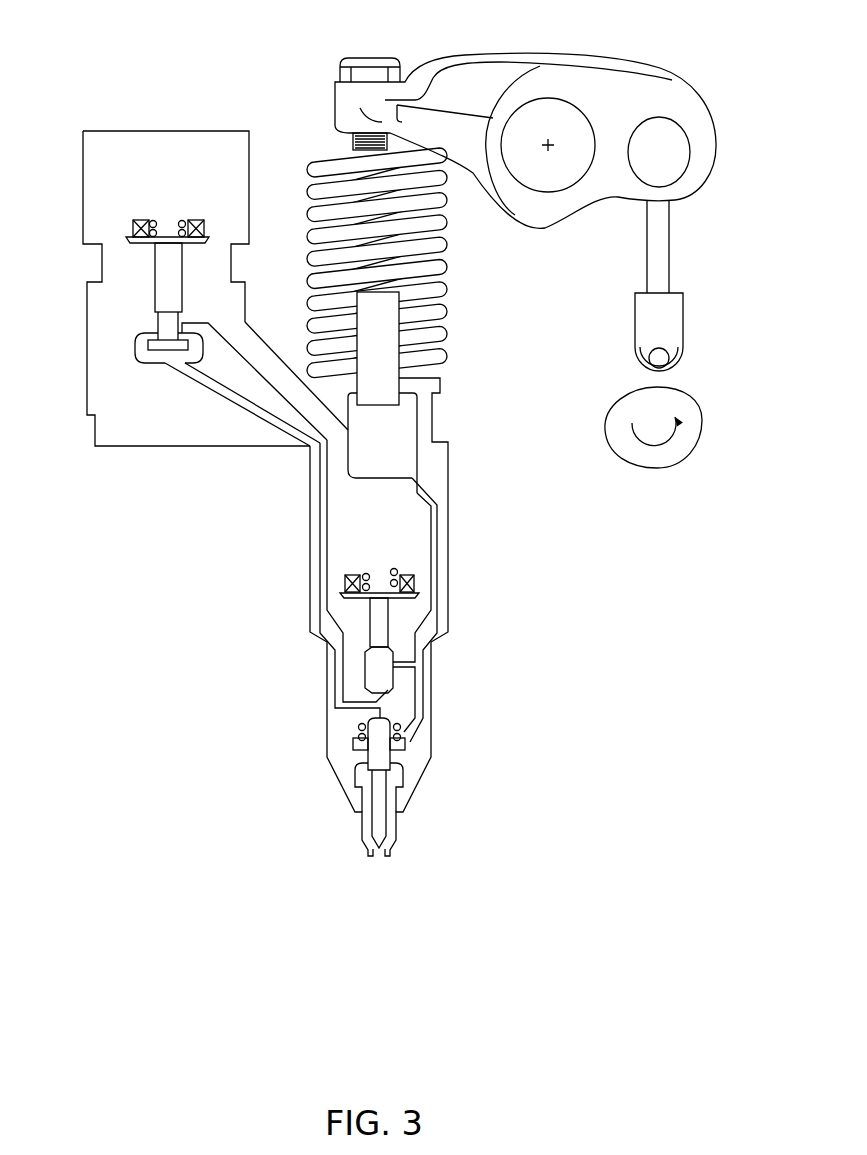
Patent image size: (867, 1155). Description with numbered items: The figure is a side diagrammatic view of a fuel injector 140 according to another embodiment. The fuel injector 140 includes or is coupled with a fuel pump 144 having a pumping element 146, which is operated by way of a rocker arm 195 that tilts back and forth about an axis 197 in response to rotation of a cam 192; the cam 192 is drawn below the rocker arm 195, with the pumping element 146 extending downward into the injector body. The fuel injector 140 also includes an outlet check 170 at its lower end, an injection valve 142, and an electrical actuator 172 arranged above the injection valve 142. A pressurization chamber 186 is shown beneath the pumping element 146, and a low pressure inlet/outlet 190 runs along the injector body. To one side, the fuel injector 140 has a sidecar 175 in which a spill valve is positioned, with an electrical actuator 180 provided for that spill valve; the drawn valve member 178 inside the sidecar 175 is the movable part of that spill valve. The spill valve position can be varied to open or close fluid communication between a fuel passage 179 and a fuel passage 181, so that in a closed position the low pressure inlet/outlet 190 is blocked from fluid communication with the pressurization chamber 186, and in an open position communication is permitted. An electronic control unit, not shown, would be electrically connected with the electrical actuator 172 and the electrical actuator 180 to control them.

The fuel injector 140 is at (480, 577).
The injection valve 142 is at (397, 634).
The fuel pump 144 is at (480, 340).
The pumping element 146 is at (400, 368).
The outlet check 170 is at (395, 742).
The actuator 172 is at (398, 562).
The sidecar 175 is at (100, 460).
The valve member 178 is at (152, 304).
The fuel passage 179 is at (260, 352).
The actuator 180 is at (148, 207).
The fuel passage 181 is at (192, 383).
The pressurization chamber 186 is at (410, 432).
The low pressure inlet/outlet 190 is at (310, 527).
The cam 192 is at (700, 415).
The rocker arm 195 is at (670, 73).
The axis 197 is at (555, 140).